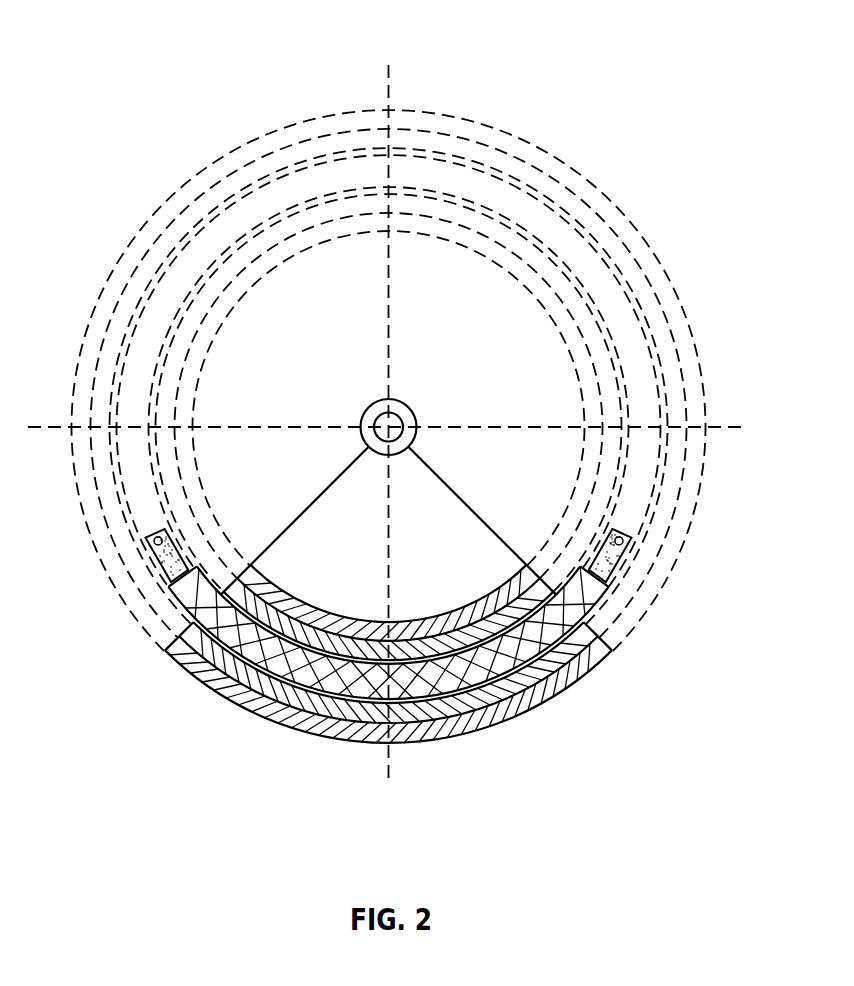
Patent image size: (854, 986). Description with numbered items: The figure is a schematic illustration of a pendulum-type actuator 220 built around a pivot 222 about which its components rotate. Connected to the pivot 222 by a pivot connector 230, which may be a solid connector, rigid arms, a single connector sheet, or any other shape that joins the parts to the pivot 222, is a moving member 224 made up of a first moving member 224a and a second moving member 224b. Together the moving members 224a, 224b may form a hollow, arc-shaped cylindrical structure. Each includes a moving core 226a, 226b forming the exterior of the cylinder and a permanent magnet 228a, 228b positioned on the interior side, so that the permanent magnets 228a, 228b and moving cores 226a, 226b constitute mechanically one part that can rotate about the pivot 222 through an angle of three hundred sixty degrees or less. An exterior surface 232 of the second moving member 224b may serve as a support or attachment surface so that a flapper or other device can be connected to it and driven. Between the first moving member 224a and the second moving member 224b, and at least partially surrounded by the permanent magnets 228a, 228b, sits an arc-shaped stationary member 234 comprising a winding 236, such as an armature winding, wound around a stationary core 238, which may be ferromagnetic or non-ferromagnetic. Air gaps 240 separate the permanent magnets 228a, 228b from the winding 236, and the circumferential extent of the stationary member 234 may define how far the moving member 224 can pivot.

The pendulum-type actuator 220 is at (116, 55).
The pivot 222 is at (370, 403).
The moving member 224 is at (627, 648).
The first moving member 224a is at (400, 617).
The second moving member 224b is at (450, 748).
The moving core 226a is at (473, 603).
The moving core 226b is at (568, 680).
The permanent magnet 228a is at (278, 623).
The permanent magnet 228b is at (252, 685).
The pivot connector 230 is at (422, 485).
The exterior surface 232 is at (350, 743).
The stationary member 234 is at (638, 543).
The winding 236 is at (183, 602).
The stationary core 238 is at (625, 570).
The air gaps 240 is at (217, 592).